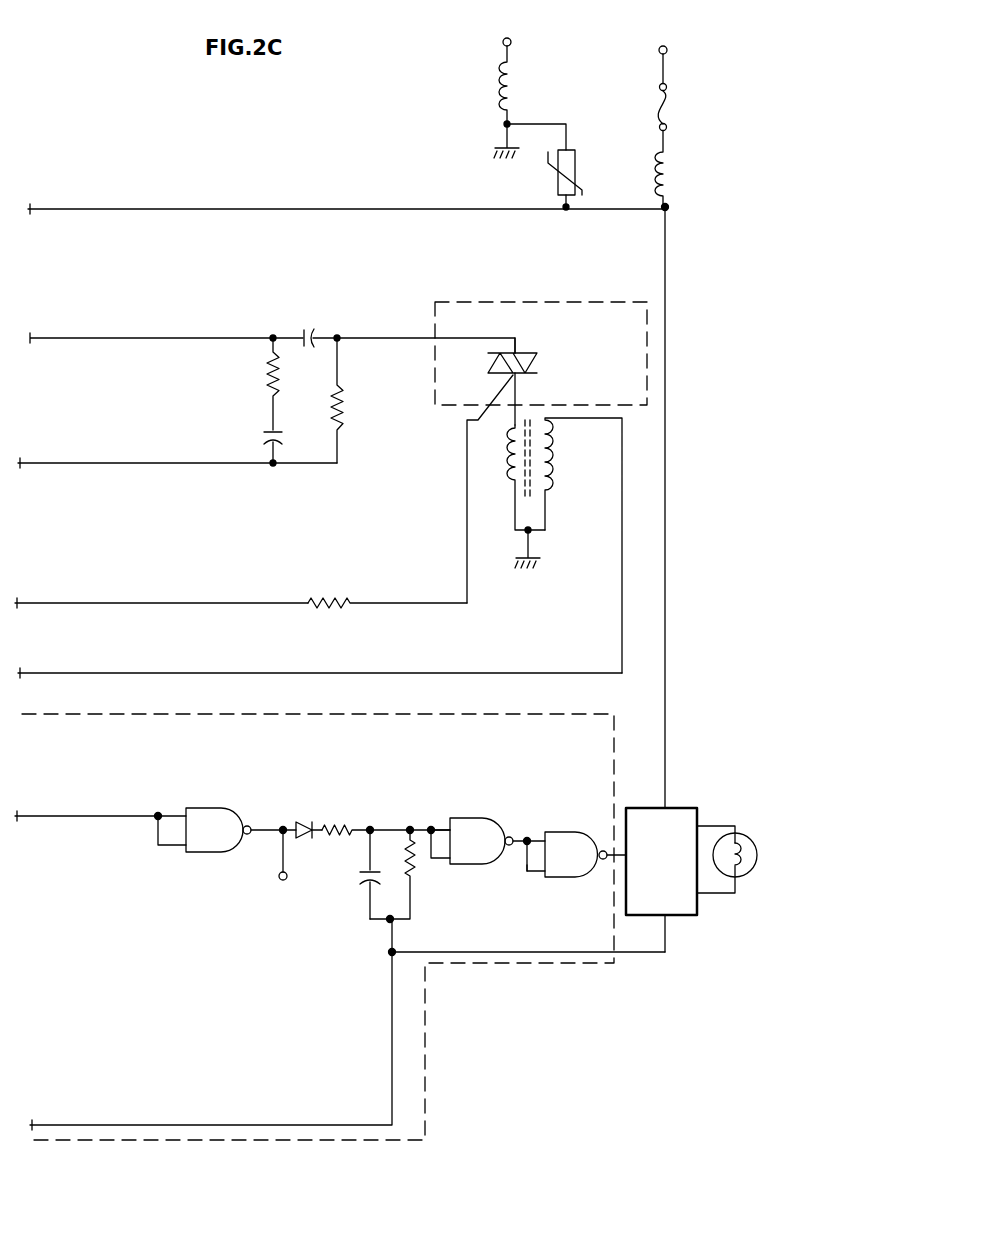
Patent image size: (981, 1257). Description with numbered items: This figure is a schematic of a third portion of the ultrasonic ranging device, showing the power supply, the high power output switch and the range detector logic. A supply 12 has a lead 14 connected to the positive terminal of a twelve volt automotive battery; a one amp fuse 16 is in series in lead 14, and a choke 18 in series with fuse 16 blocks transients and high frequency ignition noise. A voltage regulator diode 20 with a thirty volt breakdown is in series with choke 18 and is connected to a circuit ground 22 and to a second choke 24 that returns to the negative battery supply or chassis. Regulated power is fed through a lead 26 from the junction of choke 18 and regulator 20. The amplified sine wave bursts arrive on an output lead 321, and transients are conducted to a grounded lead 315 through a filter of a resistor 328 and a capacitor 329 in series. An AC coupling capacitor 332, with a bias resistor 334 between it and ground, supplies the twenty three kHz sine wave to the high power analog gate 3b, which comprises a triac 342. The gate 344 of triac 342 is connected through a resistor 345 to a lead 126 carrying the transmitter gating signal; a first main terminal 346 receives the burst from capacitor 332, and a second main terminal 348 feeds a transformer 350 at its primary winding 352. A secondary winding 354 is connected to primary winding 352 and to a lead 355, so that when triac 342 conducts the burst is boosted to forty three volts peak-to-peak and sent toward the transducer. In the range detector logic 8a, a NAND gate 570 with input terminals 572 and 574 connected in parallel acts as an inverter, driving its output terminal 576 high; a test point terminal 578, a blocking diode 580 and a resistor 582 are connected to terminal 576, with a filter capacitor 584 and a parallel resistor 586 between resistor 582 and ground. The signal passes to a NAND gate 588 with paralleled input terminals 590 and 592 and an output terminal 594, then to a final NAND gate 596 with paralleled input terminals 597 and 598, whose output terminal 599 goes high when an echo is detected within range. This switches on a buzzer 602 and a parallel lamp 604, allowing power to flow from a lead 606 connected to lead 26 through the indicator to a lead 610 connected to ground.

The supply 12 is at (668, 72).
The lead 14 is at (662, 72).
The fuse 16 is at (667, 105).
The choke 18 is at (668, 178).
The voltage regulator diode 20 is at (576, 162).
The circuit ground 22 is at (504, 137).
The second choke 24 is at (512, 88).
The lead 26 is at (288, 208).
The output lead 321 is at (165, 336).
The AC coupling capacitor 332 is at (316, 335).
The resistor 328 is at (268, 375).
The capacitor 329 is at (265, 432).
The bias resistor 334 is at (341, 405).
The grounded lead 315 is at (144, 465).
The high power analog gate 3b is at (578, 302).
The triac 342 is at (533, 349).
The gate 344 is at (492, 358).
The first main terminal 346 is at (518, 352).
The second main terminal 348 is at (520, 388).
The transformer 350 is at (568, 458).
The primary winding 352 is at (510, 457).
The secondary winding 354 is at (552, 460).
The lead 126 is at (135, 602).
The resistor 345 is at (340, 590).
The lead 355 is at (532, 673).
The lead 606 is at (667, 483).
The range detector logic 8a is at (385, 714).
The NAND gate 570 is at (208, 808).
The input terminal 572 is at (172, 810).
The input terminal 574 is at (168, 848).
The output terminal 576 is at (268, 826).
The test point terminal 578 is at (280, 848).
The blocking diode 580 is at (308, 826).
The resistor 582 is at (338, 830).
The capacitor 584 is at (365, 882).
The parallel resistor 586 is at (415, 872).
The NAND gate 588 is at (470, 818).
The input terminal 590 is at (440, 826).
The input terminal 592 is at (443, 858).
The output terminal 594 is at (515, 835).
The final NAND gate 596 is at (575, 877).
The input terminal 597 is at (533, 834).
The input terminal 598 is at (535, 871).
The output terminal 599 is at (604, 850).
The buzzer 602 is at (680, 915).
The lamp 604 is at (753, 870).
The lead 610 is at (391, 1055).